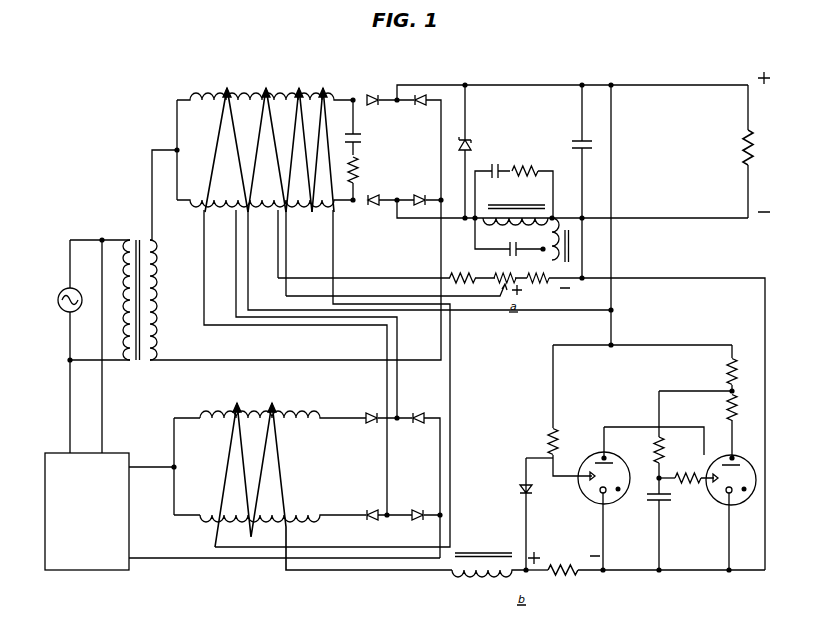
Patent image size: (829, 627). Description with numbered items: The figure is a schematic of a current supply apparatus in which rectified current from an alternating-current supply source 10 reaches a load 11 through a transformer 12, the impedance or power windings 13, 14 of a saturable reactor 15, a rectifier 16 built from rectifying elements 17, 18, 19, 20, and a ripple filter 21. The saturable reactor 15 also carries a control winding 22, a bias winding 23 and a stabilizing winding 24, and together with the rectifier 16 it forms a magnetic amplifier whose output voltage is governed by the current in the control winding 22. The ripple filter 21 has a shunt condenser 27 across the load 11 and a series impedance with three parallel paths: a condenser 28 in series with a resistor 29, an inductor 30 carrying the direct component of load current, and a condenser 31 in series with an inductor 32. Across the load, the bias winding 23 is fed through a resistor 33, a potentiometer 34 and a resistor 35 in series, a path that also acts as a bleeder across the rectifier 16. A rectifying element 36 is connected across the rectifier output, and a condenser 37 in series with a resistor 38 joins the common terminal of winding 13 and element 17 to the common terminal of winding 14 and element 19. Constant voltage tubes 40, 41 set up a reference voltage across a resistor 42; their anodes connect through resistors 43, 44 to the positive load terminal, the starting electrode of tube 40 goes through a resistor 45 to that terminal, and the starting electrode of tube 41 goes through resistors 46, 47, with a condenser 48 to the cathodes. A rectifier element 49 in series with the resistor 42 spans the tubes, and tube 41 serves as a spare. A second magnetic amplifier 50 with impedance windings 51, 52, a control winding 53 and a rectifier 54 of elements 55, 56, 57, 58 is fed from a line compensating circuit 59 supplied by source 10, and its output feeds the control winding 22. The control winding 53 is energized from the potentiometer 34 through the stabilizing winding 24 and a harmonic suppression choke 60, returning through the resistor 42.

The alternating-current supply source 10 is at (60, 287).
The load 11 is at (732, 148).
The transformer 12 is at (137, 239).
The impedance winding 13 is at (206, 108).
The impedance winding 14 is at (202, 199).
The saturable reactor 15 is at (265, 131).
The rectifier 16 is at (546, 137).
The rectifying element 17 is at (371, 96).
The rectifying element 18 is at (420, 106).
The rectifying element 19 is at (371, 195).
The rectifying element 20 is at (420, 194).
The ripple filter 21 is at (536, 140).
The control winding 22 is at (234, 87).
The bias winding 23 is at (271, 105).
The stabilizing winding 24 is at (338, 100).
The shunt condenser 27 is at (588, 144).
The condenser 28 is at (494, 164).
The resistor 29 is at (529, 166).
The inductor 30 is at (544, 215).
The condenser 31 is at (507, 252).
The inductor 32 is at (550, 240).
The resistor 33 is at (458, 272).
The potentiometer 34 is at (499, 298).
The resistor 35 is at (550, 282).
The rectifying element 36 is at (466, 138).
The condenser 37 is at (354, 138).
The resistor 38 is at (354, 170).
The constant voltage tube 40 is at (590, 501).
The constant voltage tube 41 is at (738, 458).
The resistor 42 is at (556, 576).
The resistor 43 is at (728, 404).
The resistor 44 is at (726, 370).
The resistor 45 is at (542, 442).
The resistor 46 is at (698, 485).
The resistor 47 is at (666, 458).
The condenser 48 is at (650, 500).
The rectifier element 49 is at (518, 494).
The magnetic amplifier 50 is at (313, 475).
The impedance winding 51 is at (214, 424).
The impedance winding 52 is at (208, 512).
The control winding 53 is at (283, 478).
The rectifier 54 is at (397, 474).
The rectifier element 55 is at (373, 412).
The rectifier element 56 is at (415, 414).
The rectifier element 57 is at (372, 509).
The rectifier element 58 is at (418, 509).
The line compensating circuit 59 is at (75, 570).
The harmonic suppression choke 60 is at (470, 578).